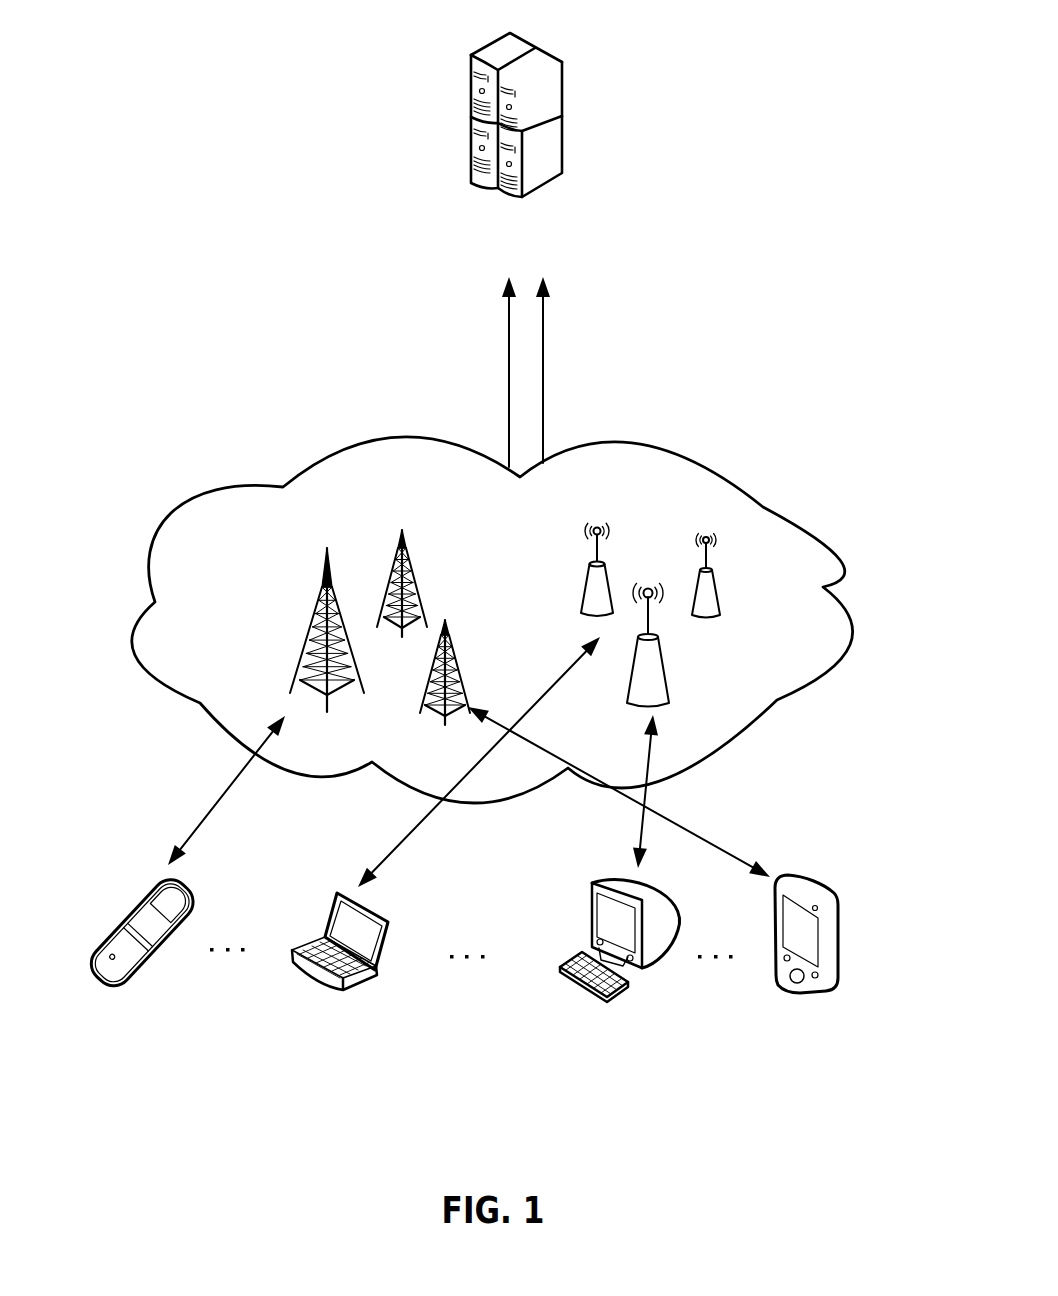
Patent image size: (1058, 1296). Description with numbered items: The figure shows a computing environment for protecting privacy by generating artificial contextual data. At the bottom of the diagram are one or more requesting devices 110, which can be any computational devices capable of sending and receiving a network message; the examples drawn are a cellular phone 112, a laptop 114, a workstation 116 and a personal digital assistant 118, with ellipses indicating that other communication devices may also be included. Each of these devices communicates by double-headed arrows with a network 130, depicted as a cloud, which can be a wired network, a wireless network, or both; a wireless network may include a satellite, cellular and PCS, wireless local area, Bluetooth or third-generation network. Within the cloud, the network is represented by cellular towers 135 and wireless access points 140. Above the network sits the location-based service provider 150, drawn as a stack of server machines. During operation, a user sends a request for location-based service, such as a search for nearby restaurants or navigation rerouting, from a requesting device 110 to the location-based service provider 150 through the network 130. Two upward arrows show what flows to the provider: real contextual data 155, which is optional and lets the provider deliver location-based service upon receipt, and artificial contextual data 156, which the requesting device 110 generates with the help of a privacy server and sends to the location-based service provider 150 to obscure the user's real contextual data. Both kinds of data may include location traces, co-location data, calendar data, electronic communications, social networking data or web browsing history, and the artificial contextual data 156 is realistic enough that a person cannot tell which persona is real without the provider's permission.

The requesting devices 110 is at (478, 991).
The cellular phone 112 is at (128, 932).
The laptop 114 is at (364, 941).
The workstation 116 is at (597, 941).
The personal digital assistant (PDA) 118 is at (838, 934).
The network 130 is at (295, 466).
The cellular towers 135 is at (380, 627).
The wireless access points 140 is at (650, 614).
The location-based service provider 150 is at (521, 153).
The real contextual data 155 is at (419, 372).
The artificial contextual data 156 is at (613, 370).